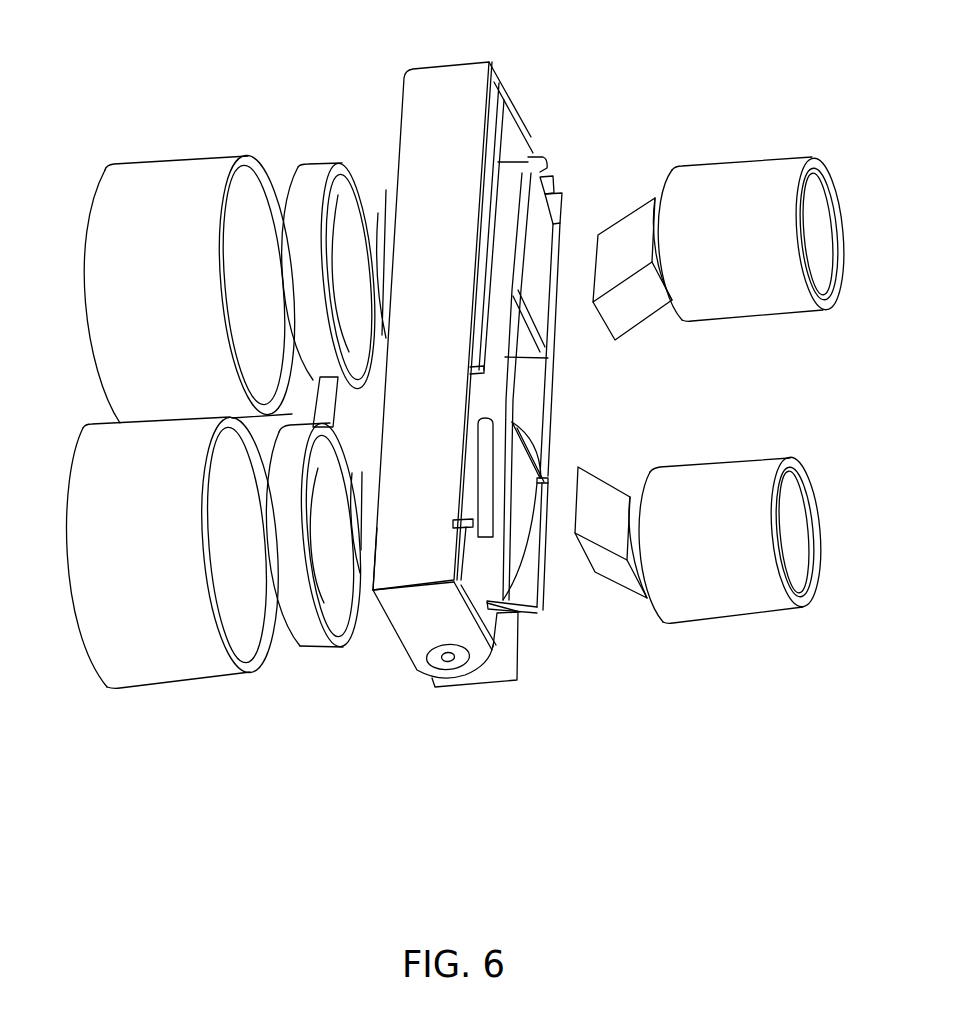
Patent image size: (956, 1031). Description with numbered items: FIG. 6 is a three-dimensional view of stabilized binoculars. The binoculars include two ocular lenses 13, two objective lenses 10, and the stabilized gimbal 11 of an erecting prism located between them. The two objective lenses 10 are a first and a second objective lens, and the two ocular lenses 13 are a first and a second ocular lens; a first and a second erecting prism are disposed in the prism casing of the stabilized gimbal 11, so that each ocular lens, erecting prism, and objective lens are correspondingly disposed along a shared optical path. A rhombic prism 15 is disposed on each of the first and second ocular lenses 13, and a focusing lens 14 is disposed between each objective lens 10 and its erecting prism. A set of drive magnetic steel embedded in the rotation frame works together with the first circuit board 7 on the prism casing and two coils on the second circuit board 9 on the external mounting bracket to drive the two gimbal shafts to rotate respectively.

The first circuit board 7 is at (493, 453).
The second circuit board 9 is at (533, 607).
The objective lens 10 is at (185, 217).
The stabilized gimbal of an erecting prism 11 is at (447, 102).
The ocular lens 13 is at (773, 178).
The focusing lens 14 is at (335, 160).
The rhombic prism 15 is at (617, 327).